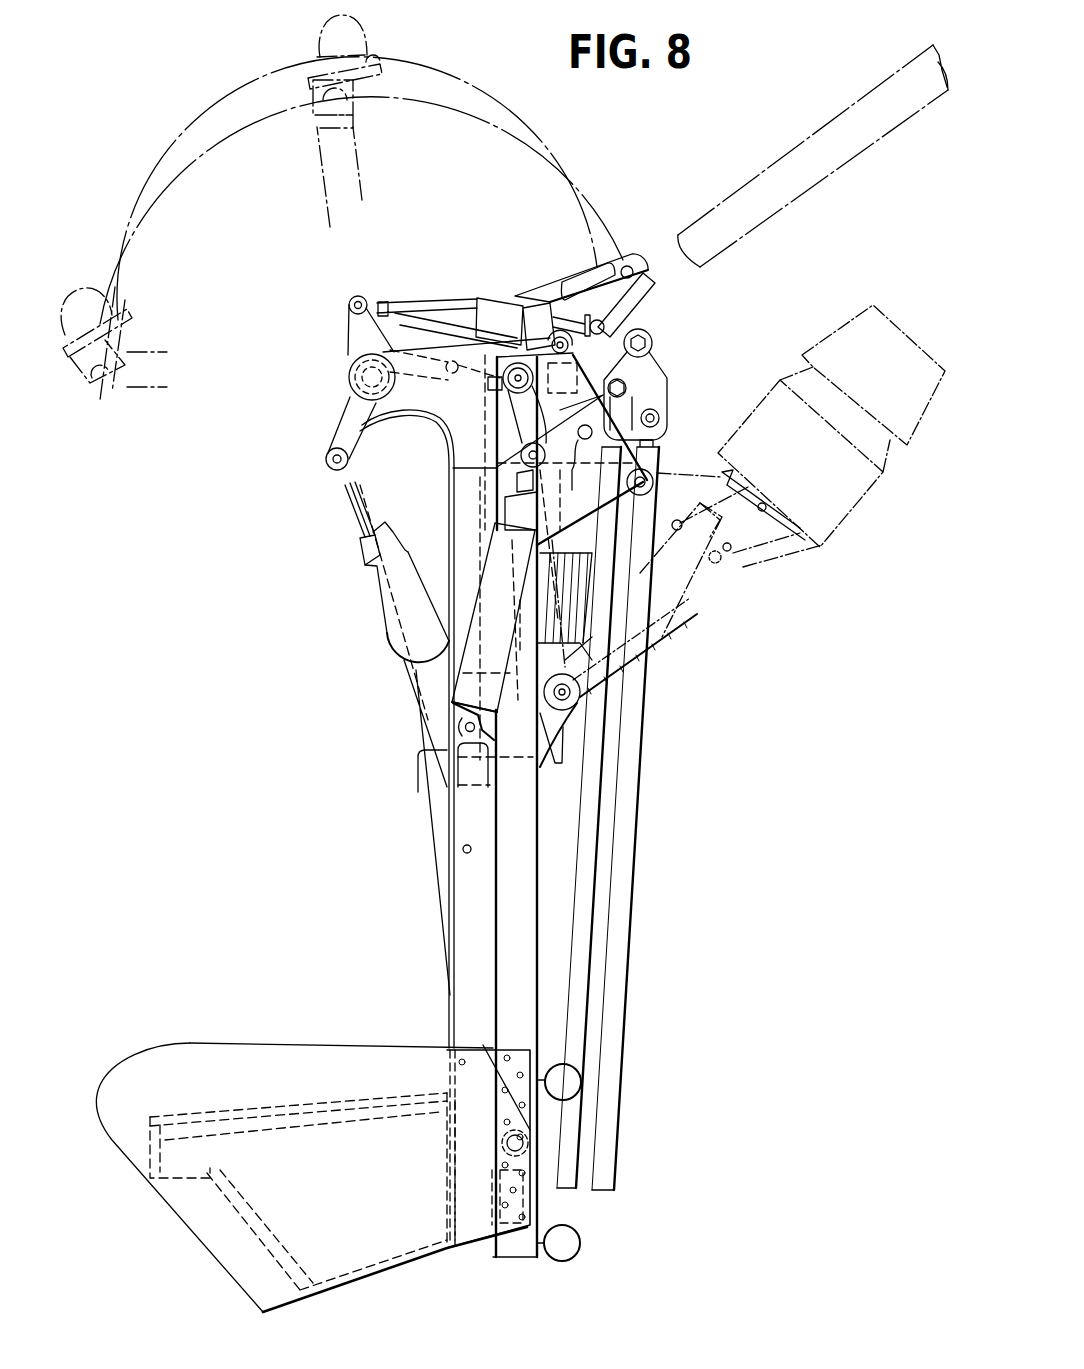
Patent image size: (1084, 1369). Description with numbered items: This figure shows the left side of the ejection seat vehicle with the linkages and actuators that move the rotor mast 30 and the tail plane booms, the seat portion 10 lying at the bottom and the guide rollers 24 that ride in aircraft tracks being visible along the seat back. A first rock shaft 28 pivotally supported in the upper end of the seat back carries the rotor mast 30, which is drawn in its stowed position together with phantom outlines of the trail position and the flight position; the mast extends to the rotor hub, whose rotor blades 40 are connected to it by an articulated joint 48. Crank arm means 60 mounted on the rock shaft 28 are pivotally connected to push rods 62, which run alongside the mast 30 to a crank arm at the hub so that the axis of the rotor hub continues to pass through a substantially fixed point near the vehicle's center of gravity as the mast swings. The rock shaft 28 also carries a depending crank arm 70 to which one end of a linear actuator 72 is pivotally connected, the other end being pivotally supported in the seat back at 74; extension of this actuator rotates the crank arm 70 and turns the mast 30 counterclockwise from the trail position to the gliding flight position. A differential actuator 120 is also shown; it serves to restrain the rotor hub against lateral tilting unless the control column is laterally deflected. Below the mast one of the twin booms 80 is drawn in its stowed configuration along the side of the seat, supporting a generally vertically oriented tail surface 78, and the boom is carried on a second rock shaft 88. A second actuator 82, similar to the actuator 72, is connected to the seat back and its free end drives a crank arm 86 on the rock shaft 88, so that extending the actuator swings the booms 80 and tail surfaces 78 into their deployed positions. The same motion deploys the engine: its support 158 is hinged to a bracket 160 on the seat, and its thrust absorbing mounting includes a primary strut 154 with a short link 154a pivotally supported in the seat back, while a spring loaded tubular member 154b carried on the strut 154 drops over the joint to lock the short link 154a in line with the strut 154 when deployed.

The seat portion 10 is at (272, 1105).
The guide rollers 24 is at (580, 700).
The first rock shaft 28 is at (355, 372).
The rotor mast 30 is at (577, 273).
The rotor blades 40 is at (580, 920).
The articulated joint 48 is at (645, 344).
The crank arm means 60 is at (355, 332).
The push rods 62 is at (417, 300).
The crank arm 70 is at (348, 418).
The linear actuator 72 is at (350, 514).
The pivot support 74 is at (462, 727).
The vertical tail surfaces 78 is at (328, 1044).
The twin booms 80 is at (540, 822).
The actuator 82 is at (480, 568).
The crank arm 86 is at (636, 393).
The rock shaft 88 is at (500, 382).
The differential actuator 120 is at (488, 303).
The primary strut 154 is at (663, 632).
The short link 154a is at (562, 714).
The tubular member 154b is at (540, 597).
The engine support 158 is at (777, 457).
The bracket 160 is at (648, 447).